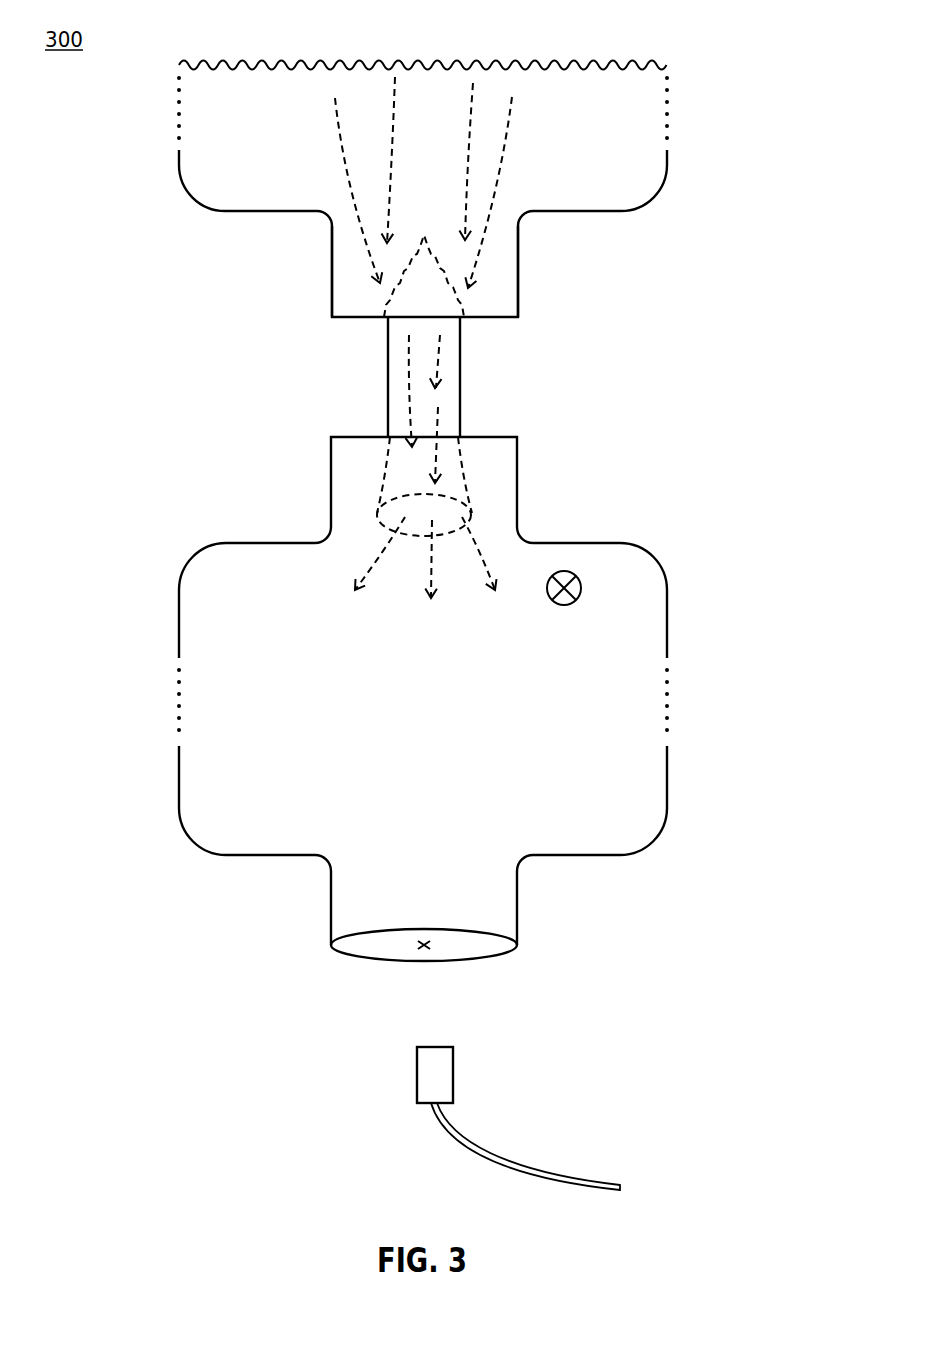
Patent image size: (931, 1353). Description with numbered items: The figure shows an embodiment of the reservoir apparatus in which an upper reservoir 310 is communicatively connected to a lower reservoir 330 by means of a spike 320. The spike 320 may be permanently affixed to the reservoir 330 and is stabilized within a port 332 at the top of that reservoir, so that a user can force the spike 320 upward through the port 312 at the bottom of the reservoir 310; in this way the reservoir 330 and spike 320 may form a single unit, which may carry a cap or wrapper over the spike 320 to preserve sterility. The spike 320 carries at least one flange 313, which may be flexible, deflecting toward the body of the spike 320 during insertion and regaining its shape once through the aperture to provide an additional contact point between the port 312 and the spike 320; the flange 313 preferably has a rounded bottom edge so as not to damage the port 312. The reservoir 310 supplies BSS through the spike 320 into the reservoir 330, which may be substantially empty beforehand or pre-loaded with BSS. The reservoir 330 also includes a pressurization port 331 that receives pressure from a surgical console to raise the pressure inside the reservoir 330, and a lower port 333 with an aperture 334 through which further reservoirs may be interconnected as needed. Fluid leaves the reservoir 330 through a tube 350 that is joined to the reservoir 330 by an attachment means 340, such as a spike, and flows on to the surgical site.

The reservoir 310 is at (667, 152).
The port 312 is at (518, 270).
The flange 313 is at (388, 303).
The spike 320 is at (460, 390).
The reservoir 330 is at (667, 610).
The pressurization port 331 is at (547, 590).
The port 332 is at (518, 470).
The port 333 is at (517, 905).
The aperture 334 is at (372, 952).
The attachment means 340 is at (417, 1087).
The tube 350 is at (462, 1156).